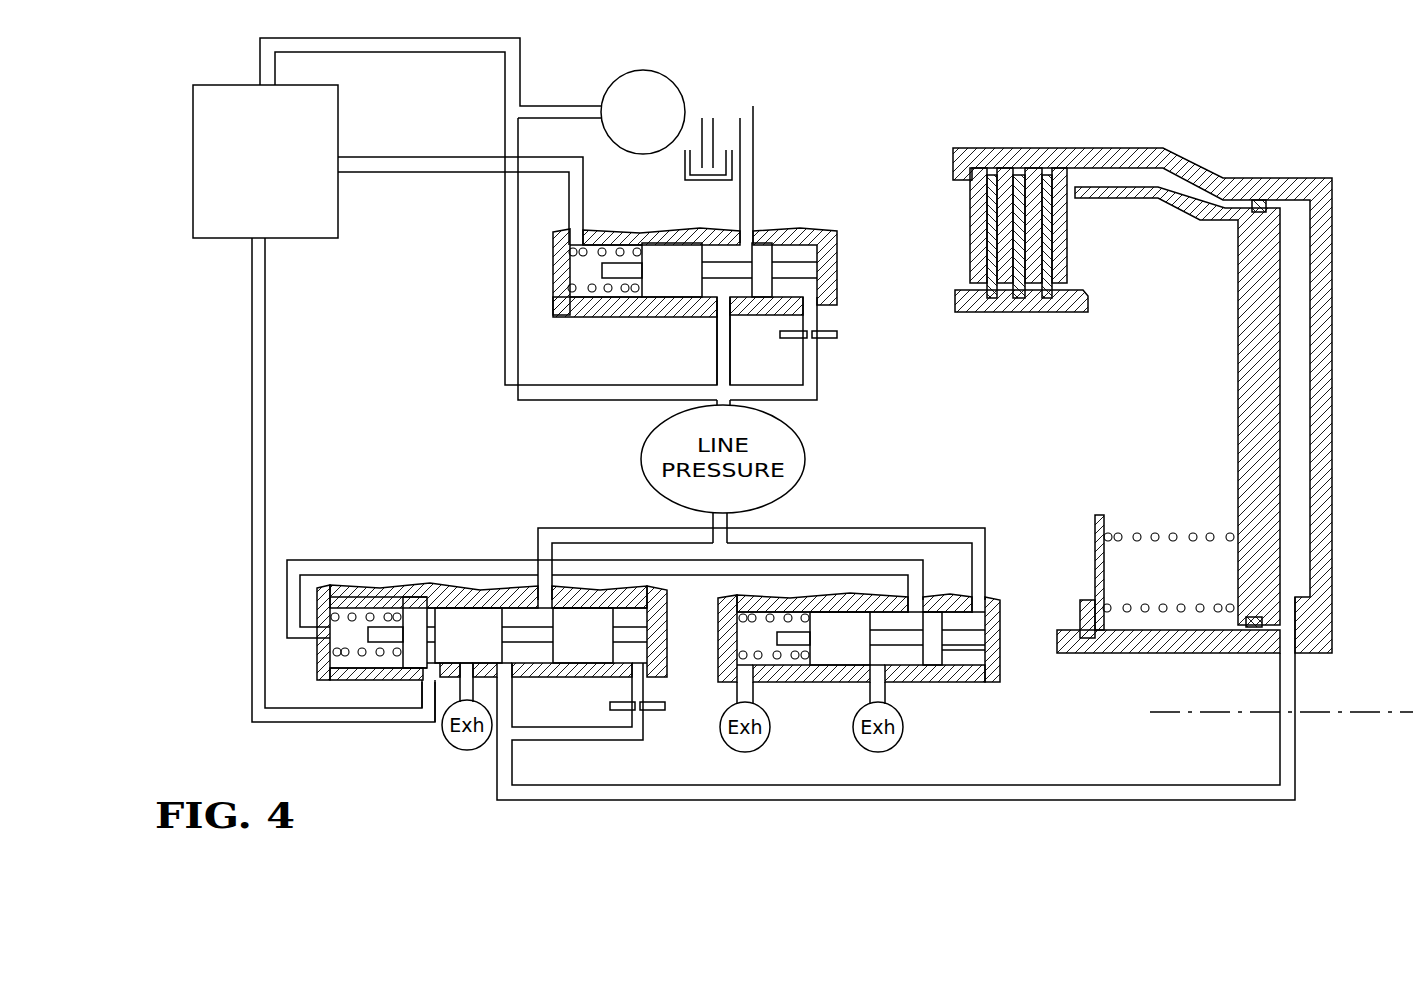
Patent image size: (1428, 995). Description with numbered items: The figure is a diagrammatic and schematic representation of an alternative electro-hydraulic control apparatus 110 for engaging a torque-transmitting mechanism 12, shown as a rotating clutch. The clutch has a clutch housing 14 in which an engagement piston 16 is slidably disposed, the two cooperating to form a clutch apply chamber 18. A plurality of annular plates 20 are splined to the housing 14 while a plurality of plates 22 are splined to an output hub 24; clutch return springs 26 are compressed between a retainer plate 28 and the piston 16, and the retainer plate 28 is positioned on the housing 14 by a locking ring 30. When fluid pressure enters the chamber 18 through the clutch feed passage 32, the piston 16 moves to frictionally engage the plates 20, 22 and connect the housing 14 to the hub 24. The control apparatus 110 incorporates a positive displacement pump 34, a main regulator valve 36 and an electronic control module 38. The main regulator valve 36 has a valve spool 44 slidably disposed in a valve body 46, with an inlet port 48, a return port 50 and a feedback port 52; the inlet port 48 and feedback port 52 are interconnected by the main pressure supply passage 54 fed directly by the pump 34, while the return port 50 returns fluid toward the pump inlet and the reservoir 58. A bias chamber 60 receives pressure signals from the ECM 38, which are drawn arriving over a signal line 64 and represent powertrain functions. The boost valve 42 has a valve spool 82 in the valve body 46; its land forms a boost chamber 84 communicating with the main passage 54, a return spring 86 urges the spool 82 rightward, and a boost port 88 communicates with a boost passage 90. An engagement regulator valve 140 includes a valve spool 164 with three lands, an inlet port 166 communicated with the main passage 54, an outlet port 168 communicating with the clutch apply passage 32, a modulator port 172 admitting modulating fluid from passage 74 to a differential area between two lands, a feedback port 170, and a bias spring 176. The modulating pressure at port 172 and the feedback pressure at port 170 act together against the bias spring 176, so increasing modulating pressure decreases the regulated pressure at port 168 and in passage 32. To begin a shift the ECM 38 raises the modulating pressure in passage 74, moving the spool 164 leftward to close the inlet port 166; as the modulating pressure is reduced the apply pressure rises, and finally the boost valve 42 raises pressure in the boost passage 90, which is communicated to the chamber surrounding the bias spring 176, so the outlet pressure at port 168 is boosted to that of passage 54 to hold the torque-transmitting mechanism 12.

The torque-transmitting mechanism 12 is at (1162, 402).
The clutch housing 14 is at (1323, 197).
The engagement piston 16 is at (1255, 307).
The clutch apply chamber 18 is at (1293, 377).
The annular plates 20 is at (1056, 172).
The plates 22 is at (1047, 294).
The output hub 24 is at (955, 300).
The clutch return springs 26 is at (1157, 533).
The retainer plate 28 is at (1094, 537).
The locking ring 30 is at (1080, 618).
The clutch feed passage 32 is at (568, 805).
The positive displacement pump 34 is at (614, 74).
The main regulator valve 36 is at (690, 261).
The electronic control module 38 is at (228, 78).
The boost valve 42 is at (861, 646).
The valve spool 44 is at (616, 265).
The valve body 46 is at (805, 233).
The inlet port 48 is at (712, 342).
The return port 50 is at (746, 238).
The feedback port 52 is at (808, 320).
The main pressure supply passage 54 is at (503, 262).
The reservoir 58 is at (720, 155).
The bias chamber 60 is at (592, 292).
The control signal line 64 is at (402, 157).
The passage 74 is at (252, 398).
The valve spool 82 is at (973, 632).
The boost chamber 84 is at (963, 657).
The return spring 86 is at (752, 612).
The boost port 88 is at (913, 614).
The boost passage 90 is at (808, 562).
The control apparatus 110 is at (824, 142).
The engagement regulator valve 140 is at (488, 627).
The valve spool 164 is at (443, 610).
The inlet port 166 is at (543, 601).
The outlet port 168 is at (512, 693).
The feedback port 170 is at (655, 703).
The modulator port 172 is at (428, 688).
The bias spring 176 is at (355, 614).